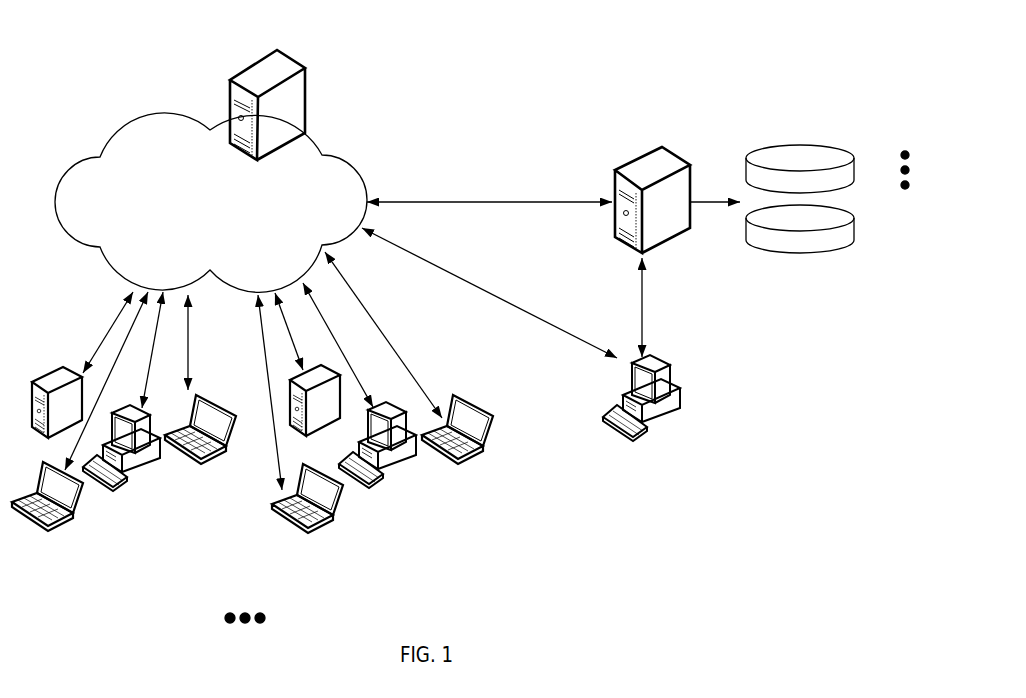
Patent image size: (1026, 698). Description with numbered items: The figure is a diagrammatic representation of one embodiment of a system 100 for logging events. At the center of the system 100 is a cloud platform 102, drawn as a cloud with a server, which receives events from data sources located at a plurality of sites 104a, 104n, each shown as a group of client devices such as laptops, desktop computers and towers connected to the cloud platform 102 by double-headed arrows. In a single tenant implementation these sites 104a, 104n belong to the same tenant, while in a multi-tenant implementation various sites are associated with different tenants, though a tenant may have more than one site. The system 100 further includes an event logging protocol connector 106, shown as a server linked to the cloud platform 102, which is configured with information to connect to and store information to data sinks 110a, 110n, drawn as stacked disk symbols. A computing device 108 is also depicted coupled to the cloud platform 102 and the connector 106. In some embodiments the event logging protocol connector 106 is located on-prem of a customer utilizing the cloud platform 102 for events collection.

The system 100 is at (54, 50).
The cloud platform 102 is at (230, 79).
The site 104a is at (223, 530).
The site 104n is at (477, 530).
The event logging protocol connector 106 is at (640, 150).
The computing device 108 is at (692, 403).
The data sink 110a is at (827, 148).
The data sink 110n is at (855, 243).